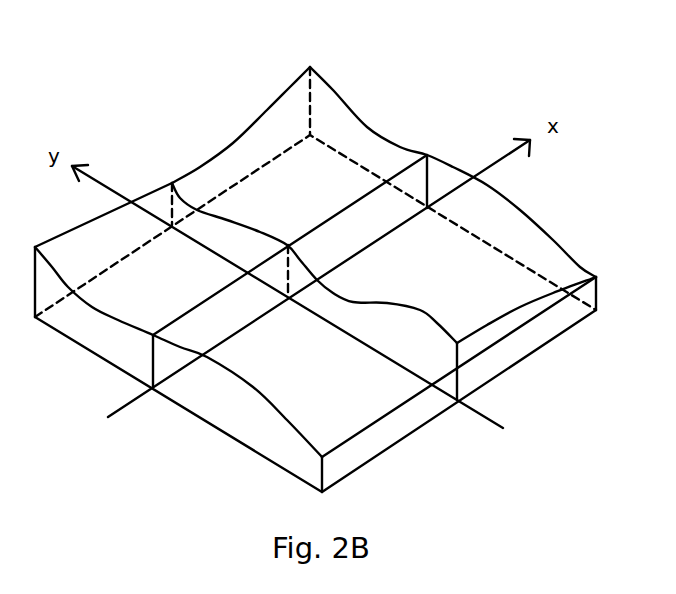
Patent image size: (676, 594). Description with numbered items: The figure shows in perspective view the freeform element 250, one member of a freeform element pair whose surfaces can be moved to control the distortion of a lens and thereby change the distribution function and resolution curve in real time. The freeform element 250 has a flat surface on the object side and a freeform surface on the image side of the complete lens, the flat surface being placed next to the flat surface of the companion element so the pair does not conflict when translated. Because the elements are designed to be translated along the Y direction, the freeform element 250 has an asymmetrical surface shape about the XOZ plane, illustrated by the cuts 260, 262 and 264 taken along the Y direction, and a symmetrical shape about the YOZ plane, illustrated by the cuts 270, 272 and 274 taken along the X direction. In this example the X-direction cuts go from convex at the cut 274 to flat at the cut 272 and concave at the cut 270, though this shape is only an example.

The freeform element 250 is at (315, 254).
The cut along the Y direction 260 is at (178, 352).
The cut along the Y direction 262 is at (314, 291).
The cut along the Y direction 264 is at (453, 172).
The cut along the X direction 270 is at (241, 125).
The cut along the X direction 272 is at (290, 245).
The cut along the X direction 274 is at (526, 310).